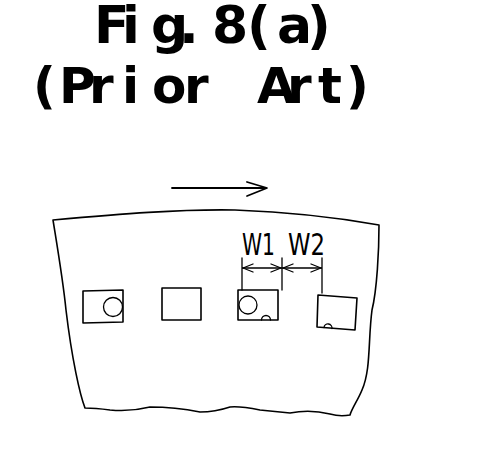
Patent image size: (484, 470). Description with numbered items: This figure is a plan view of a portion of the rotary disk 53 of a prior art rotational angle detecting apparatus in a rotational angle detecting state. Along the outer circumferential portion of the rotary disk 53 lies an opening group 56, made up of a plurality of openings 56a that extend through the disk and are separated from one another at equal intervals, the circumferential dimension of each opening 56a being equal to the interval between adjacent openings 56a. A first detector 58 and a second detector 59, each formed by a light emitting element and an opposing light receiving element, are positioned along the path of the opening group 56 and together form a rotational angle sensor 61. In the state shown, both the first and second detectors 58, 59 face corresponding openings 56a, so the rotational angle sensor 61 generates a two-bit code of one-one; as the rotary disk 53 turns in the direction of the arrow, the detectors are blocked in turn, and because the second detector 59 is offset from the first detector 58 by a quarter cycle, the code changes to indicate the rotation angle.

The rotary disk 53 is at (343, 230).
The opening group 56 is at (346, 343).
The opening 56a is at (303, 349).
The first detector 58 is at (238, 305).
The second detector 59 is at (112, 316).
The rotational angle sensor 61 is at (108, 362).